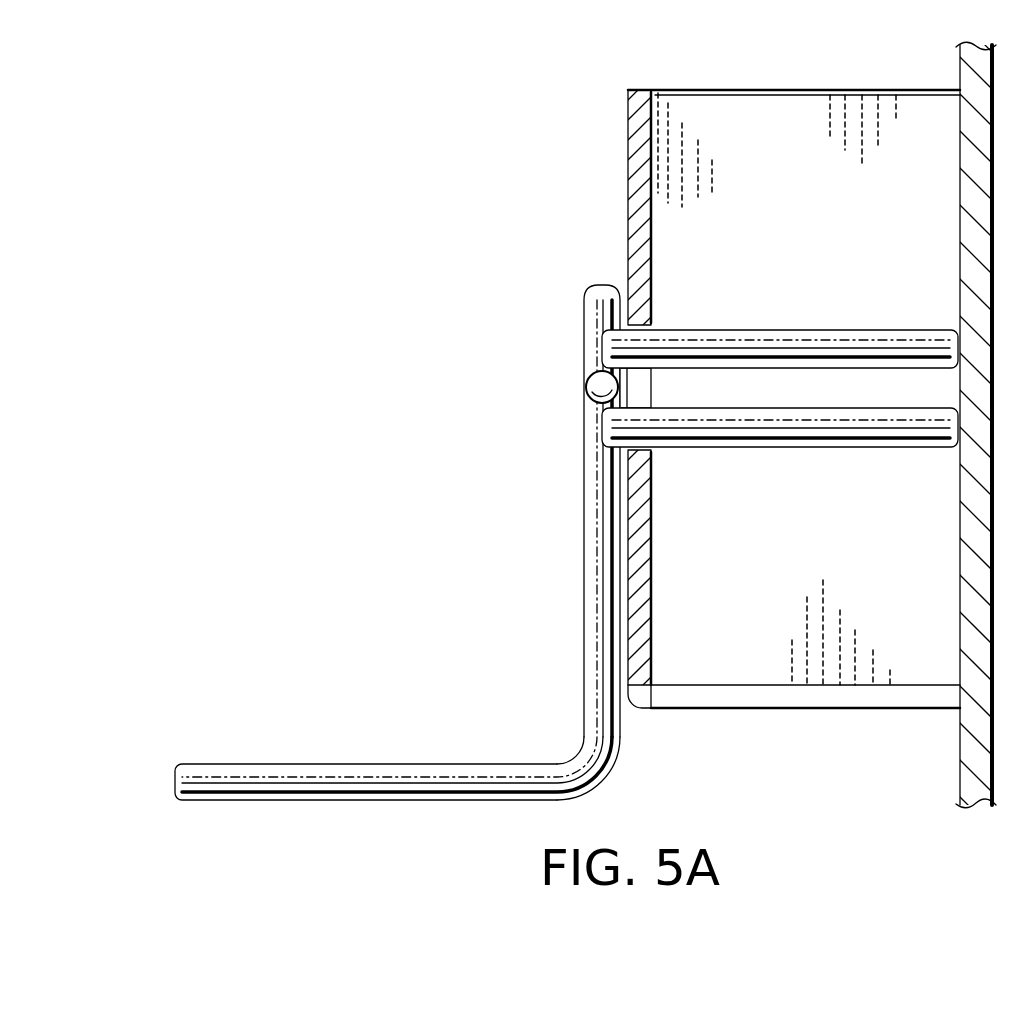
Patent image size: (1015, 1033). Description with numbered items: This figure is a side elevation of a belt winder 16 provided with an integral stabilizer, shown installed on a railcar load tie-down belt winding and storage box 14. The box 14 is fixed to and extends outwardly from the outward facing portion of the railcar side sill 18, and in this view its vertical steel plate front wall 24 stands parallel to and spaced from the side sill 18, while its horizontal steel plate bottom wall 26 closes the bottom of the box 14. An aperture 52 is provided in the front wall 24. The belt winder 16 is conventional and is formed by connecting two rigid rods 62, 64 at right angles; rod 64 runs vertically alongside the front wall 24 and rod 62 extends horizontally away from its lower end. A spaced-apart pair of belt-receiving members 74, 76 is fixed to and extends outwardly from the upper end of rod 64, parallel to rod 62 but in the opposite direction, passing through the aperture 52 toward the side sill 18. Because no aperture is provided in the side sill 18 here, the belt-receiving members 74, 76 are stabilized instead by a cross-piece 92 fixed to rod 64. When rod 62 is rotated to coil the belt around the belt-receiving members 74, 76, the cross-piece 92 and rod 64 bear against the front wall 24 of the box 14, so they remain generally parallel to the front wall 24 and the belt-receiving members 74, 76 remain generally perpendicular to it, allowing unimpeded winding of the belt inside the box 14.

The belt winding and storage box 14 is at (626, 170).
The belt winder 16 is at (397, 542).
The railcar side sill 18 is at (950, 532).
The front wall 24 is at (655, 258).
The bottom wall 26 is at (713, 685).
The aperture 52 is at (650, 389).
The rod 62 is at (363, 762).
The rod 64 is at (585, 562).
The belt-receiving member 74 is at (780, 460).
The belt-receiving member 76 is at (797, 328).
The cross-piece 92 is at (594, 386).